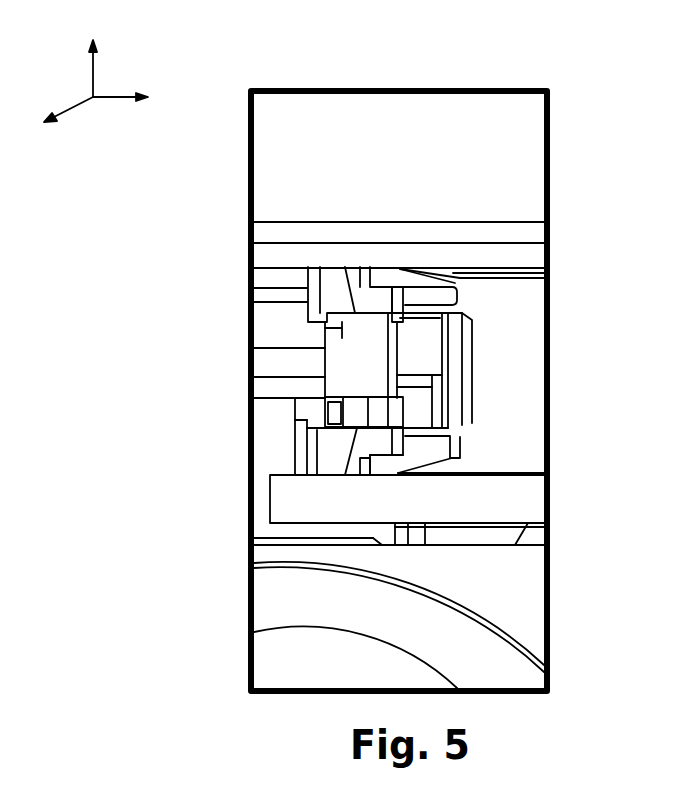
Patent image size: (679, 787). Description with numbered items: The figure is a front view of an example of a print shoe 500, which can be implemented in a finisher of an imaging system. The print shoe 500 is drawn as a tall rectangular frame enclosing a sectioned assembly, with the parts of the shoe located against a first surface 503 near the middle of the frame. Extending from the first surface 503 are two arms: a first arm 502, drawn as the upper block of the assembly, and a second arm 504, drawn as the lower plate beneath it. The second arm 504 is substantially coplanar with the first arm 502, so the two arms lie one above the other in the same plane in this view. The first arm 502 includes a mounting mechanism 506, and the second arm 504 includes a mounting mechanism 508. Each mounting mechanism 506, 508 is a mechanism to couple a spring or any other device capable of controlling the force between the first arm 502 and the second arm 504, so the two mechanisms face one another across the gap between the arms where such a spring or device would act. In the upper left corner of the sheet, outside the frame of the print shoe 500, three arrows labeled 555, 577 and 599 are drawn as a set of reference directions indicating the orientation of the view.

The print shoe 500 is at (460, 82).
The first arm 502 is at (333, 289).
The first surface 503 is at (370, 362).
The second arm 504 is at (333, 453).
The mounting mechanism 506 is at (326, 327).
The mounting mechanism 508 is at (326, 403).
The coordinate axis 555 is at (50, 118).
The coordinate axis 577 is at (138, 97).
The coordinate axis 599 is at (94, 52).